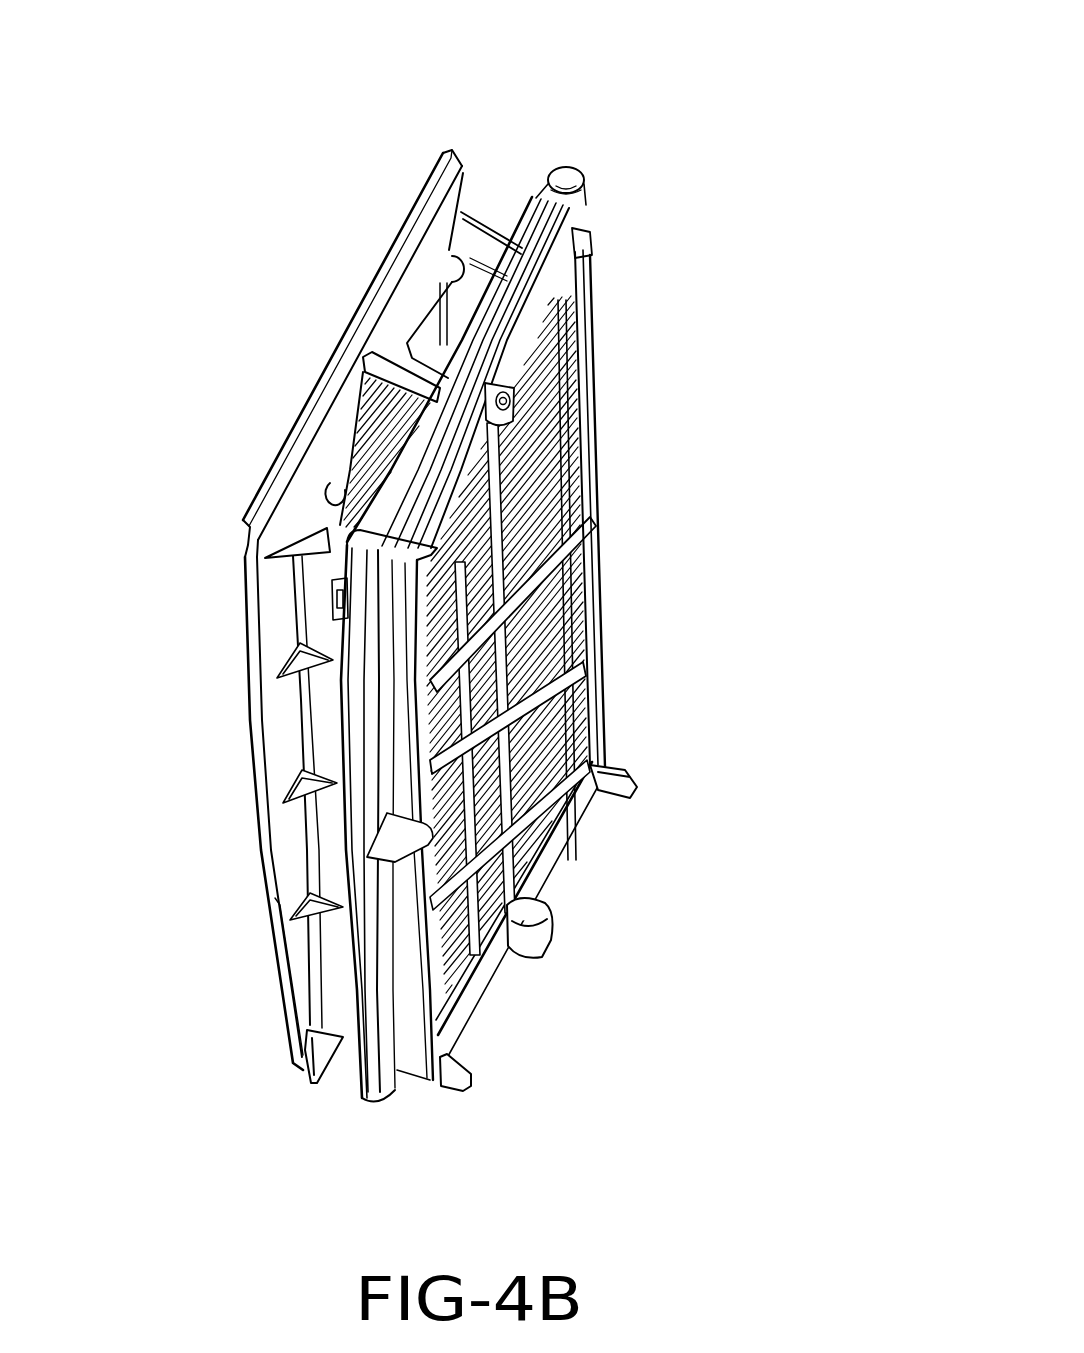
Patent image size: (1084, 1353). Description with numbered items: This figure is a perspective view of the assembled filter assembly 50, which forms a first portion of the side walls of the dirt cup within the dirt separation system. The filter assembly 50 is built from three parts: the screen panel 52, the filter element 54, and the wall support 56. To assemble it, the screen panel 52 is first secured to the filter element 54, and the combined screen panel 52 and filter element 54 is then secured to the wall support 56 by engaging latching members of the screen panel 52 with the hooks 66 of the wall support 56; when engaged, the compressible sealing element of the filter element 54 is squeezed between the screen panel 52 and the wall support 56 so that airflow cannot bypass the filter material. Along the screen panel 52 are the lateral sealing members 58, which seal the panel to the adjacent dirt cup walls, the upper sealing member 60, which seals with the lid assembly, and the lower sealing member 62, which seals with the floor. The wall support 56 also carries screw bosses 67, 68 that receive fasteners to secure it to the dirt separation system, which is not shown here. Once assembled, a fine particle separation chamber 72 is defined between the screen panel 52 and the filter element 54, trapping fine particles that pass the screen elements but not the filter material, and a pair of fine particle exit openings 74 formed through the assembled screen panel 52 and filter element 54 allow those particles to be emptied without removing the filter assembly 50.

The filter assembly 50 is at (609, 128).
The screen panel 52 is at (423, 190).
The filter element 54 is at (493, 287).
The wall support 56 is at (575, 350).
The lateral sealing members 58 is at (280, 823).
The upper sealing member 60 is at (333, 383).
The lower sealing member 62 is at (317, 1062).
The hooks 66 is at (333, 597).
The screw boss 67 is at (537, 930).
The screw boss 68 is at (507, 400).
The fine particle separation chamber 72 is at (340, 485).
The fine particle exit openings 74 is at (468, 256).